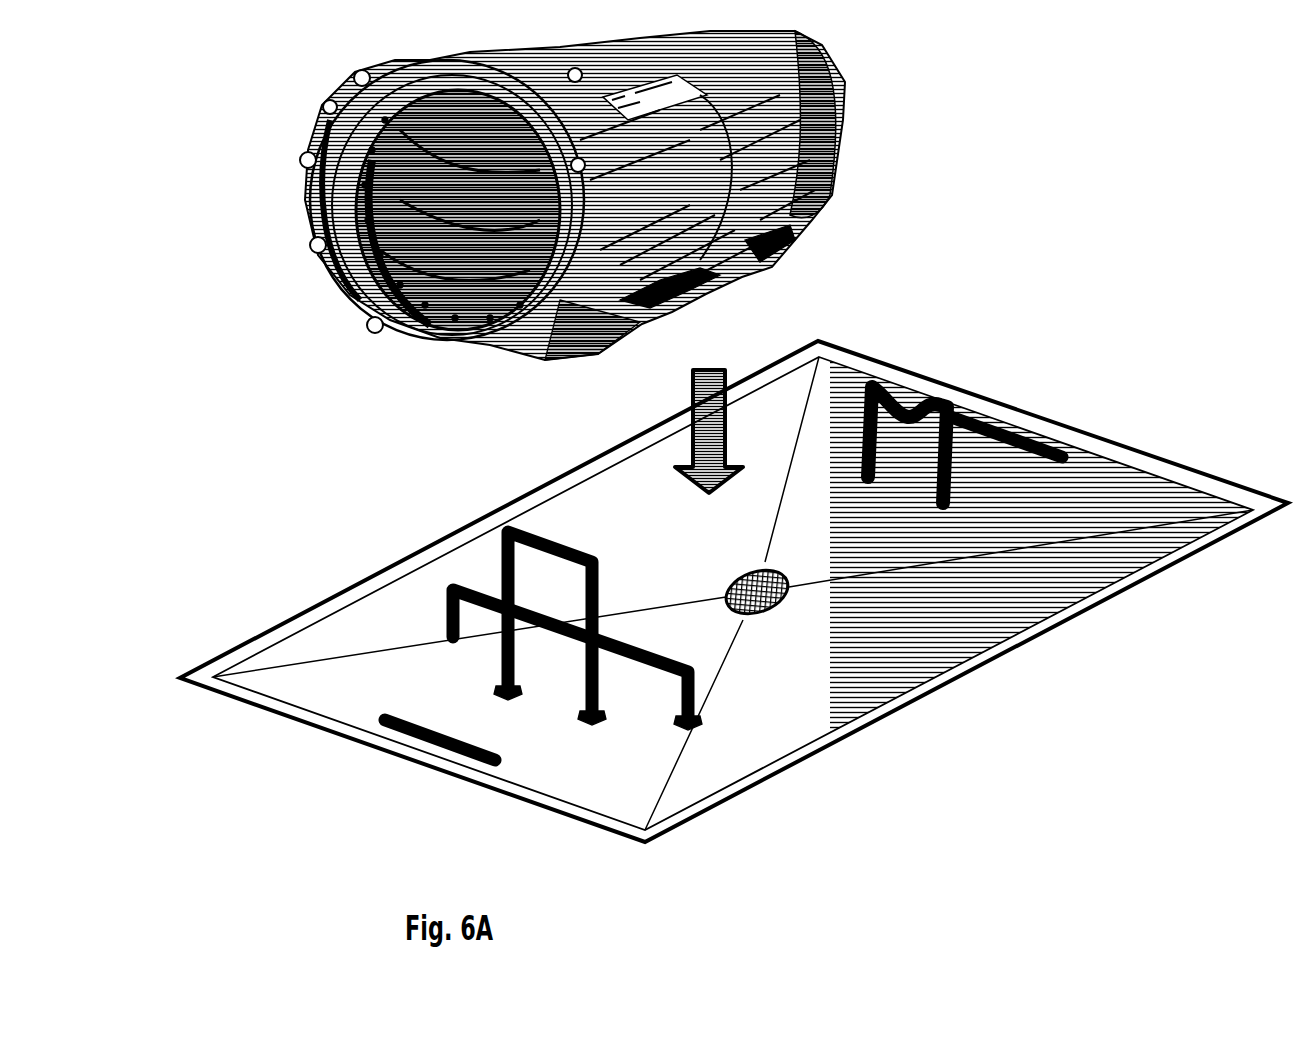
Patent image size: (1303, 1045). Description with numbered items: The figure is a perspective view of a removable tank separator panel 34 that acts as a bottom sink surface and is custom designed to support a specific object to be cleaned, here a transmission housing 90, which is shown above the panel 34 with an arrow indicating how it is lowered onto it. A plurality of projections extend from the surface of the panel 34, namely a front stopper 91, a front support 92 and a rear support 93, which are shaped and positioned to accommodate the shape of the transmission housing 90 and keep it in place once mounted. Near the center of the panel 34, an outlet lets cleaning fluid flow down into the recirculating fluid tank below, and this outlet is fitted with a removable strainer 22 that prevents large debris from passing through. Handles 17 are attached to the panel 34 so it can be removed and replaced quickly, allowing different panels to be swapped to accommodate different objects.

The transmission assembly 90 is at (869, 63).
The base plate 34 is at (548, 810).
The hotspot locating feature 22 is at (790, 606).
The locating rod 17 is at (409, 740).
The support frame 91 is at (485, 687).
The support bracket 92 is at (700, 645).
The support bracket 93 is at (955, 485).